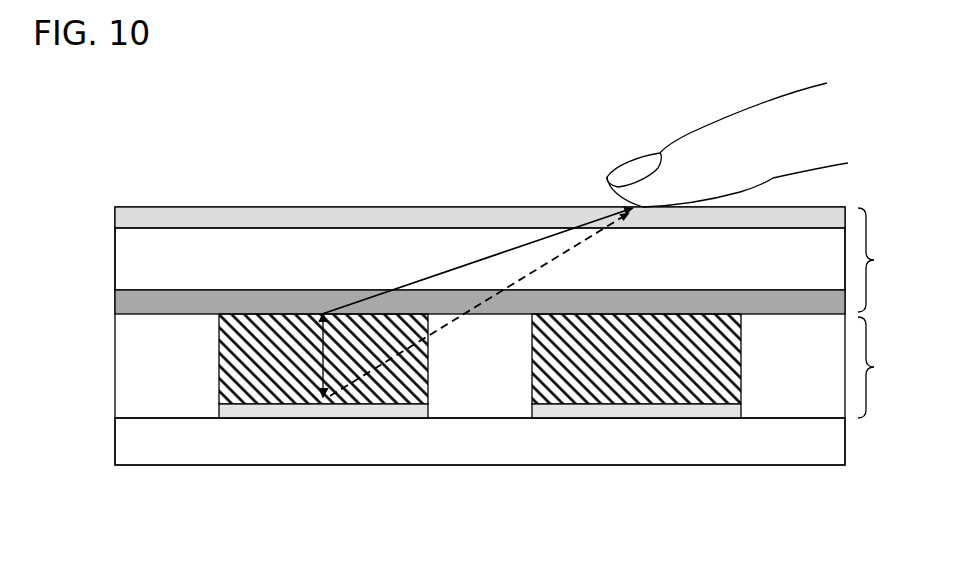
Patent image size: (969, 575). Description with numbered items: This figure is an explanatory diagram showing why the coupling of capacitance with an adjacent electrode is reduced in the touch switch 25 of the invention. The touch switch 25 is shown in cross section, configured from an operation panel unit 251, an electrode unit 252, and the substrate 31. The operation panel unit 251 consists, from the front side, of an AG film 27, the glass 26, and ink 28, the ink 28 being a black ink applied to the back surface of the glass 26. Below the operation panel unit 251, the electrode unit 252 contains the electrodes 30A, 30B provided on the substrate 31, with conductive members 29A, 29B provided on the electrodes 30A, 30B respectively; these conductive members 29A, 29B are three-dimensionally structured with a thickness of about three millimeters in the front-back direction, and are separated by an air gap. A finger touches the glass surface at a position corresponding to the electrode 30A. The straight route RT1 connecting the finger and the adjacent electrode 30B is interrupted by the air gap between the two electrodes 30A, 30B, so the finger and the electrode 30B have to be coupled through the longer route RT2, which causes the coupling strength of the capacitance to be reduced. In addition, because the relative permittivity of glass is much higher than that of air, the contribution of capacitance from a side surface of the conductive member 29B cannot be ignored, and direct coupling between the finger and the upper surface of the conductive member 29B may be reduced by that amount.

The touch switch 25 is at (187, 180).
The AG film 27 is at (115, 220).
The glass 26 is at (115, 265).
The ink 28 is at (115, 302).
The conductive member 29B is at (236, 435).
The conductive member 29A is at (734, 435).
The electrode 30B is at (322, 419).
The electrode 30A is at (636, 419).
The substrate 31 is at (845, 443).
The operation panel unit 251 is at (890, 260).
The electrode unit 252 is at (890, 367).
The straight route RT1 is at (445, 330).
The longer route RT2 is at (474, 258).